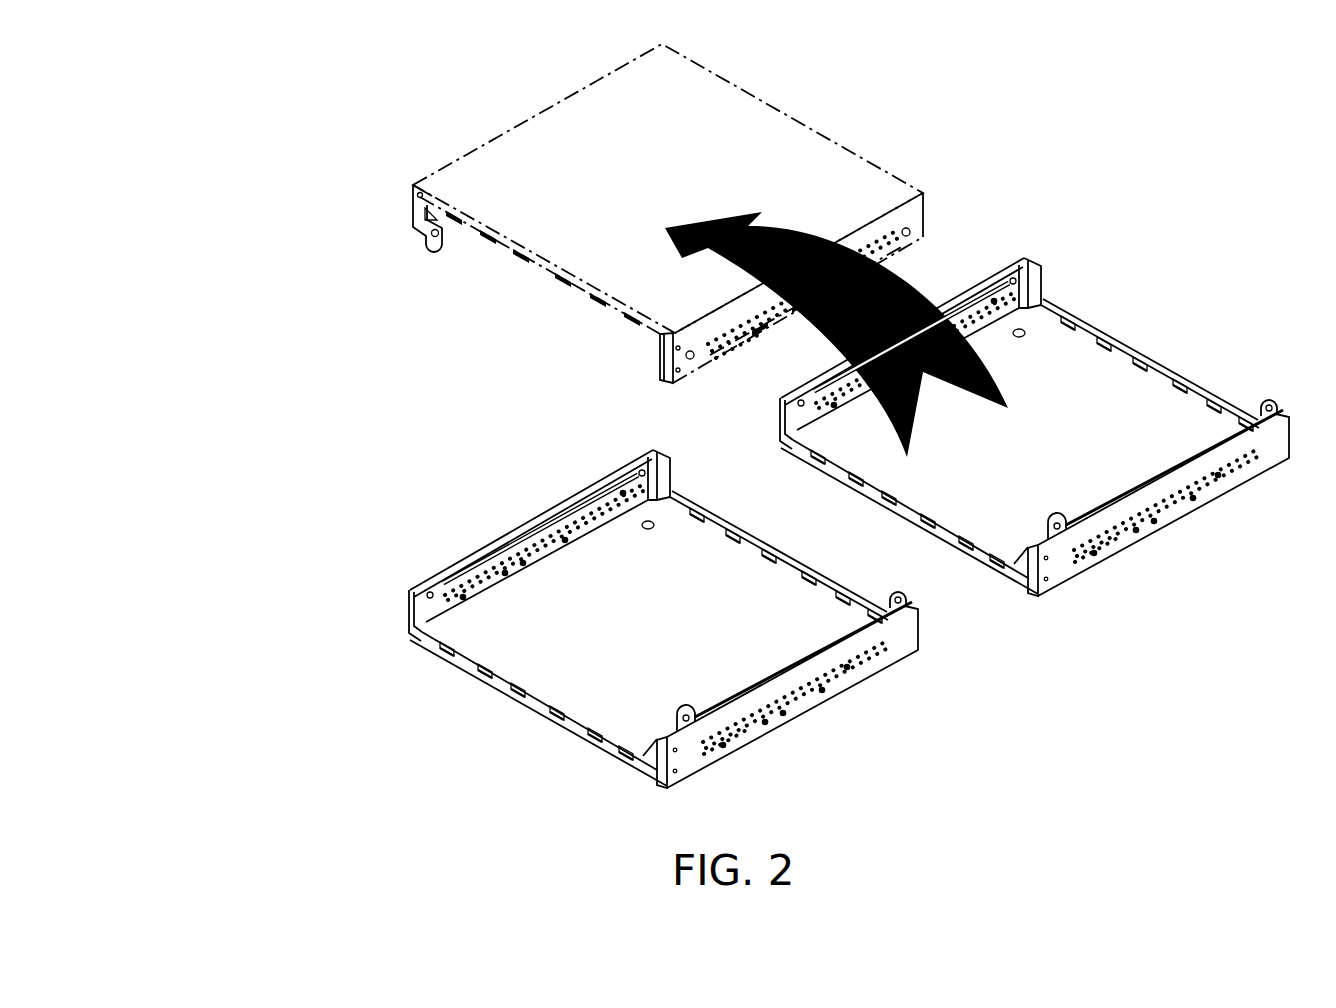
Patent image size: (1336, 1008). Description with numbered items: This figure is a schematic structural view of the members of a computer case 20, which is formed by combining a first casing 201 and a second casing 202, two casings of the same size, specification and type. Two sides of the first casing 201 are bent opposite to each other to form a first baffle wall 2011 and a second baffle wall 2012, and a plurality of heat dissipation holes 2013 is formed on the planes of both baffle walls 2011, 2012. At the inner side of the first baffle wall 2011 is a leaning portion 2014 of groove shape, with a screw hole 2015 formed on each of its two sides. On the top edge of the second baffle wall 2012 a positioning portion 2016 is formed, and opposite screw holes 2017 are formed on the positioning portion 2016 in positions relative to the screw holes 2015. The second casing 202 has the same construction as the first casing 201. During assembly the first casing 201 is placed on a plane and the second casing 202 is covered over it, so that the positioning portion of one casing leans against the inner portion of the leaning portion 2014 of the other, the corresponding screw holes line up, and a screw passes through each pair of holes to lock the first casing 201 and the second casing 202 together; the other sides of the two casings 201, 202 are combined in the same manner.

The computer case 20 is at (240, 327).
The first casing 201 is at (646, 618).
The second casing 202 is at (1038, 367).
The first baffle wall 2011 is at (610, 753).
The second baffle wall 2012 is at (430, 615).
The heat dissipation holes 2013 is at (851, 697).
The leaning portion 2014 is at (490, 562).
The screw hole 2015 is at (430, 590).
The positioning portion 2016 is at (827, 647).
The opposite screw holes 2017 is at (898, 603).